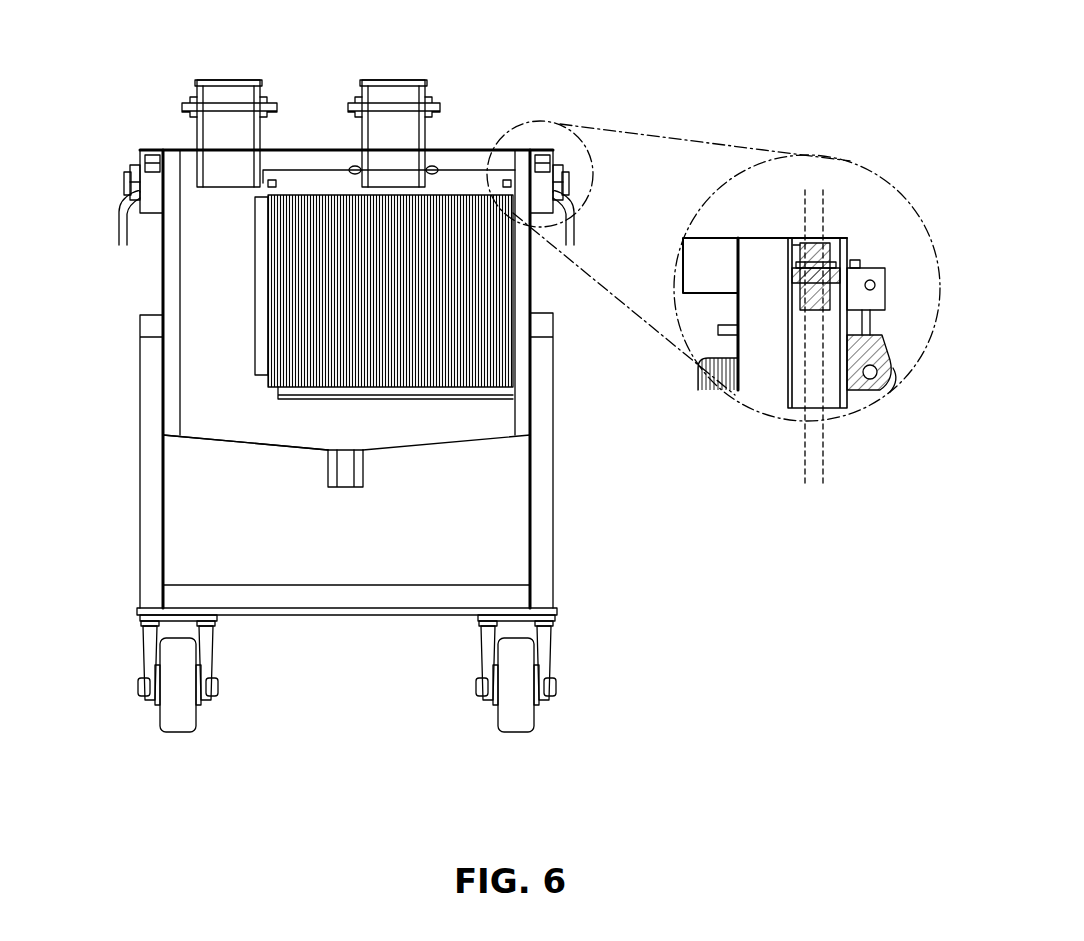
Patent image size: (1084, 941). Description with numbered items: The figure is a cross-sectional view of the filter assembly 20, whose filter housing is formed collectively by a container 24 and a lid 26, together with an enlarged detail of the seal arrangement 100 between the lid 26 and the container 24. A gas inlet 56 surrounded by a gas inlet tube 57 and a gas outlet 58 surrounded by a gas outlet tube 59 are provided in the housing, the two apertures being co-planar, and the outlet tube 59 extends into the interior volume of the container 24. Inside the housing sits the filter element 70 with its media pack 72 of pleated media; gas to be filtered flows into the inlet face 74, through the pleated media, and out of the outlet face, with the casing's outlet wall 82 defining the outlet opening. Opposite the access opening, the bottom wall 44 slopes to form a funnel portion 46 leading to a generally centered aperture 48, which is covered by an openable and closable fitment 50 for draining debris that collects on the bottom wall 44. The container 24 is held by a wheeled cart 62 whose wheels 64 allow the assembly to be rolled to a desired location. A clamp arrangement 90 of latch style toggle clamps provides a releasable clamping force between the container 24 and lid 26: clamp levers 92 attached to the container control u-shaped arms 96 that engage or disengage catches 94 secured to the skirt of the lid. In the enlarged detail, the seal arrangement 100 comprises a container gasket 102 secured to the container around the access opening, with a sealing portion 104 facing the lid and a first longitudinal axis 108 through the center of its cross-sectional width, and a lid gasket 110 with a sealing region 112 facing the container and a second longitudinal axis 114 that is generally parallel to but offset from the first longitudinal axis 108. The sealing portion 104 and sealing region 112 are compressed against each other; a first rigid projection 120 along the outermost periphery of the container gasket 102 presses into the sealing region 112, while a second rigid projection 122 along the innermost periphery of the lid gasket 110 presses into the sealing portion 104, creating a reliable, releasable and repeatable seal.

The filter assembly 20 is at (331, 309).
The container 24 is at (163, 257).
The lid 26 is at (340, 149).
The bottom wall 44 is at (218, 438).
The funnel portion 46 is at (270, 444).
The aperture 48 is at (333, 452).
The fitment 50 is at (338, 488).
The gas inlet 56 is at (250, 123).
The gas inlet tube 57 is at (195, 140).
The gas outlet 58 is at (415, 123).
The gas outlet tube 59 is at (360, 140).
The wheeled cart 62 is at (140, 480).
The wheels 64 is at (175, 722).
The filter element 70 is at (256, 222).
The media pack 72 is at (266, 335).
The inlet face 74 is at (378, 388).
The outlet wall 82 is at (470, 168).
The clamp arrangement 90 is at (118, 180).
The clamp levers 92 is at (118, 225).
The catches 94 is at (835, 282).
The u-shaped arms 96 is at (875, 322).
The seal arrangement 100 is at (556, 132).
The container gasket 102 is at (788, 300).
The sealing portion 104 is at (792, 268).
The first longitudinal axis 108 is at (805, 475).
The lid gasket 110 is at (832, 247).
The sealing region 112 is at (850, 268).
The second longitudinal axis 114 is at (823, 460).
The first rigid projection 120 is at (875, 287).
The second rigid projection 122 is at (793, 245).